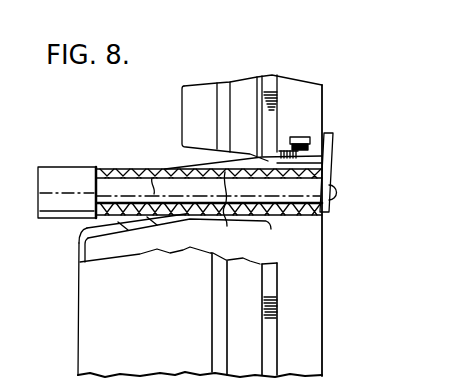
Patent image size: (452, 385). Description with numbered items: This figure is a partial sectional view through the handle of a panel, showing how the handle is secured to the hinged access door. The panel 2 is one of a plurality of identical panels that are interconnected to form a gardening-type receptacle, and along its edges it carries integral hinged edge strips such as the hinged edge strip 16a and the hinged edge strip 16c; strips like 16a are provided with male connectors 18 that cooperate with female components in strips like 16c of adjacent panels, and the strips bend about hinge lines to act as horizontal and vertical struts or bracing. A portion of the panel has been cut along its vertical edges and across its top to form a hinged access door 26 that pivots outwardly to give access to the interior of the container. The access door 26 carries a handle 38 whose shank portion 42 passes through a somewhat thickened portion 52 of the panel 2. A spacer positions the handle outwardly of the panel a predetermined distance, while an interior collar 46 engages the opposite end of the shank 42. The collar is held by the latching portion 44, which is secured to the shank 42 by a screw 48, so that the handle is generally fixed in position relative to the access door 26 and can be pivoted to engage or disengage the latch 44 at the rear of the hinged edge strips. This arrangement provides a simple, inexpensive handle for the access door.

The panel 2 is at (328, 316).
The hinged edge strip 16a is at (307, 166).
The hinged edge strip 16c is at (312, 150).
The male connector 18 is at (301, 137).
The hinged access door 26 is at (77, 320).
The handle 38 is at (74, 172).
The shank portion 42 is at (139, 167).
The latching portion 44 is at (326, 176).
The interior collar 46 is at (300, 218).
The screw 48 is at (334, 197).
The thickened portion 52 is at (209, 211).